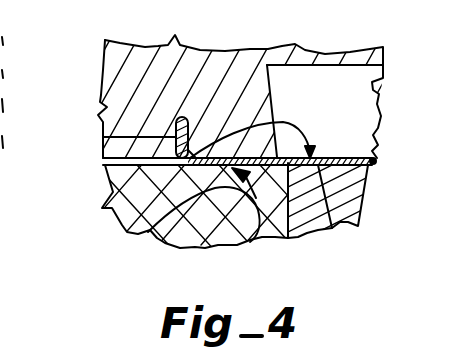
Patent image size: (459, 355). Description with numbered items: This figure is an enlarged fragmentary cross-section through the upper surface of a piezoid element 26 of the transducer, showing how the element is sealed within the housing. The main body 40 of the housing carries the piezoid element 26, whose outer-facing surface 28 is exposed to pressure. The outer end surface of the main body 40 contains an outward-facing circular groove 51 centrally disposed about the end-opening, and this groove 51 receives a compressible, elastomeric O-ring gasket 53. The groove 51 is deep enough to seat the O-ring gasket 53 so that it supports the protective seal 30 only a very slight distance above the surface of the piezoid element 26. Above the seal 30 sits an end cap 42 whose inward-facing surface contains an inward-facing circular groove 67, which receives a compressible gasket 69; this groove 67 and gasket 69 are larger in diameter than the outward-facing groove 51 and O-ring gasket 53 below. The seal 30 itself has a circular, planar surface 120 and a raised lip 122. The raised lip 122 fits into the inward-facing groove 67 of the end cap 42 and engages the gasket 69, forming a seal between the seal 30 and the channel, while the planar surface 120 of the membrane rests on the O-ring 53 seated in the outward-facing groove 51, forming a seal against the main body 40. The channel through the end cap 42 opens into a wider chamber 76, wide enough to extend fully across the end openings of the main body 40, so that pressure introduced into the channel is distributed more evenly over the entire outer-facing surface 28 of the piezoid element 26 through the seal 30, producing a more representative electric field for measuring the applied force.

The compressible gasket 69 is at (180, 118).
The inward-facing circular groove 67 is at (189, 150).
The chamber 76 is at (312, 79).
The end cap 42 is at (360, 58).
The raised lip 122 is at (105, 135).
The circular, planar surface 120 is at (346, 158).
The main body 40 is at (113, 185).
The protective seal 30 is at (160, 196).
The outward-facing circular groove 51 is at (160, 243).
The O-ring gasket 53 is at (200, 249).
The piezoid element 26 is at (303, 215).
The outer-facing surface 28 is at (335, 222).